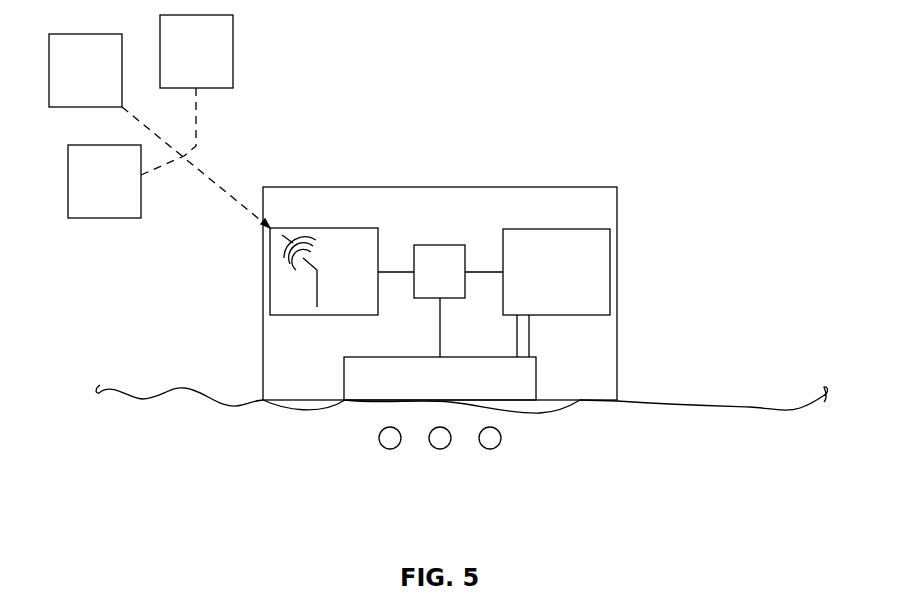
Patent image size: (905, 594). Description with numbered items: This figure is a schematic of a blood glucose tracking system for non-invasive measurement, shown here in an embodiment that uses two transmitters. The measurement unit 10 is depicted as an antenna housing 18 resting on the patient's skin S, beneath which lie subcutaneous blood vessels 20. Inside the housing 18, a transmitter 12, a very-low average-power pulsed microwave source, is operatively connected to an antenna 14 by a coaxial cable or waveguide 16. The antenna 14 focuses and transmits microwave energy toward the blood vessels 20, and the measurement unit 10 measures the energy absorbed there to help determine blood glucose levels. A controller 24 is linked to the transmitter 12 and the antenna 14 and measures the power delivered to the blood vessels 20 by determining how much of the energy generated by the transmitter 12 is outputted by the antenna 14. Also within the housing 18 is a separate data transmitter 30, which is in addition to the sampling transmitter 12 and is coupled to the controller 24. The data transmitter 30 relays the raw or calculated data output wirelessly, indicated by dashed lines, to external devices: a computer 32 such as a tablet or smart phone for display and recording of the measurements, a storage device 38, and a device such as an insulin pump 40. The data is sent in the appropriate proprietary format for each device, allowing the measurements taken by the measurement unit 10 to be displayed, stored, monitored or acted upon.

The measurement unit 10 is at (617, 142).
The transmitter 12 is at (571, 284).
The antenna 14 is at (455, 390).
The coaxial cable or waveguide 16 is at (512, 330).
The antenna housing 18 is at (610, 218).
The subcutaneous blood vessels 20 is at (390, 449).
The controller 24 is at (455, 284).
The data transmitter 30 is at (280, 297).
The computer 32 is at (211, 63).
The storage device 38 is at (100, 82).
The insulin pump 40 is at (119, 193).
The skin S is at (735, 397).